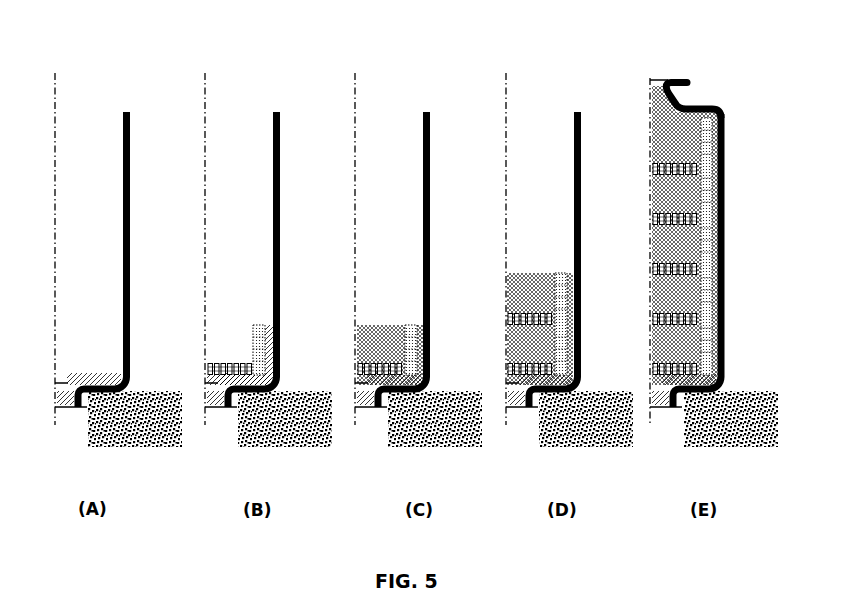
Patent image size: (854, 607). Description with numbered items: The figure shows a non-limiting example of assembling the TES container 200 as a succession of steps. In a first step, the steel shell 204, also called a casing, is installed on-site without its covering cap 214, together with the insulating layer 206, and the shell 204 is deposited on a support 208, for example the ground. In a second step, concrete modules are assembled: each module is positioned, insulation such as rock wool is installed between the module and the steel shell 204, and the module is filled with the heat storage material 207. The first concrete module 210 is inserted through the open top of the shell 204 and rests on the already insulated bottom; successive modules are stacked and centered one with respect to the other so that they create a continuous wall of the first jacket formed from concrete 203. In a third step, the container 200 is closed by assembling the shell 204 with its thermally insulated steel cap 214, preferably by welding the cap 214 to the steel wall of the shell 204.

The container 200 is at (670, 42).
The first jacket formed from concrete 203 is at (718, 106).
The steel shell 204 is at (128, 110).
The insulating layer 206 is at (121, 112).
The heat storage material 207 is at (385, 332).
The support 208 is at (134, 446).
The first concrete module 210 is at (258, 320).
The covering cap 214 is at (690, 87).